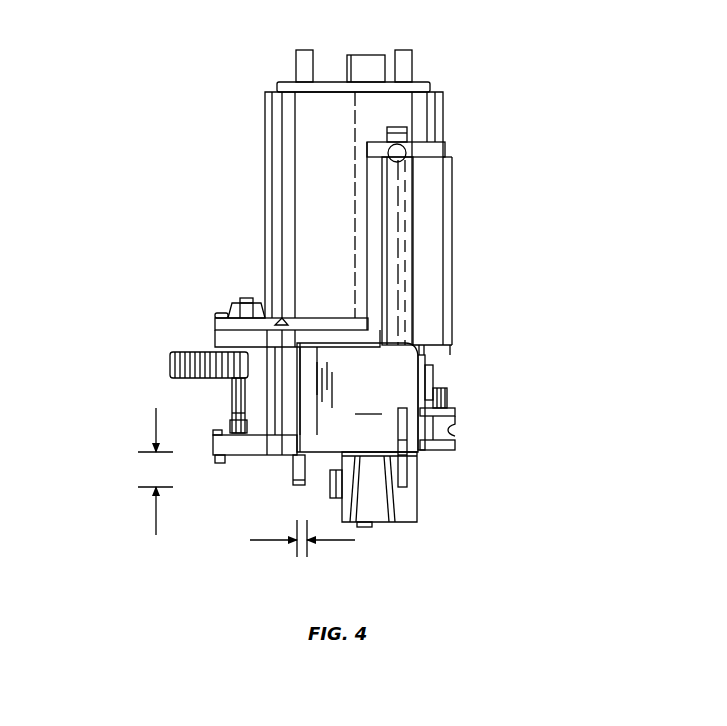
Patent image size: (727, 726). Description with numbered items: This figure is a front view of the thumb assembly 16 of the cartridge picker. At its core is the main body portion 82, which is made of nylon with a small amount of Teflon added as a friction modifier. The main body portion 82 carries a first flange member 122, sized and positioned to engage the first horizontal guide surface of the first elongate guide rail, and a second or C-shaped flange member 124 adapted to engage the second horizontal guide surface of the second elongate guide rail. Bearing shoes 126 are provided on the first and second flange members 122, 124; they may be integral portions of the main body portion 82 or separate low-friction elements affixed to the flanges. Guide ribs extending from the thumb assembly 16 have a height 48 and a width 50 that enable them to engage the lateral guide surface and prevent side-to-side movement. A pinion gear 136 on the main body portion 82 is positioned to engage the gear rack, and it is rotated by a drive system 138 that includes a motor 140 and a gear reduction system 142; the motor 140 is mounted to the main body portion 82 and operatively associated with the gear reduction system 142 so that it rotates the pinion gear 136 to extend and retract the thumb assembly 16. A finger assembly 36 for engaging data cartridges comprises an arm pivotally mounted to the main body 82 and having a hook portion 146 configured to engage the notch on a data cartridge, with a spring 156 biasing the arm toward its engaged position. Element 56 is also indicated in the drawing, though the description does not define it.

The thumb assembly 16 is at (150, 75).
The drive system 138 is at (262, 145).
The motor 140 is at (265, 200).
The spring 156 is at (412, 210).
The gear reduction system 142 is at (170, 364).
The hook portion 146 is at (414, 368).
The main body portion 82 is at (357, 435).
The first flange member 122 is at (213, 445).
The bearing shoes 126 is at (445, 420).
The C-shaped flange member 124 is at (453, 445).
The finger assembly 36 is at (418, 480).
The bolt 56 is at (293, 483).
The pinion gear 136 is at (330, 497).
The height 48 is at (148, 470).
The width 50 is at (300, 557).